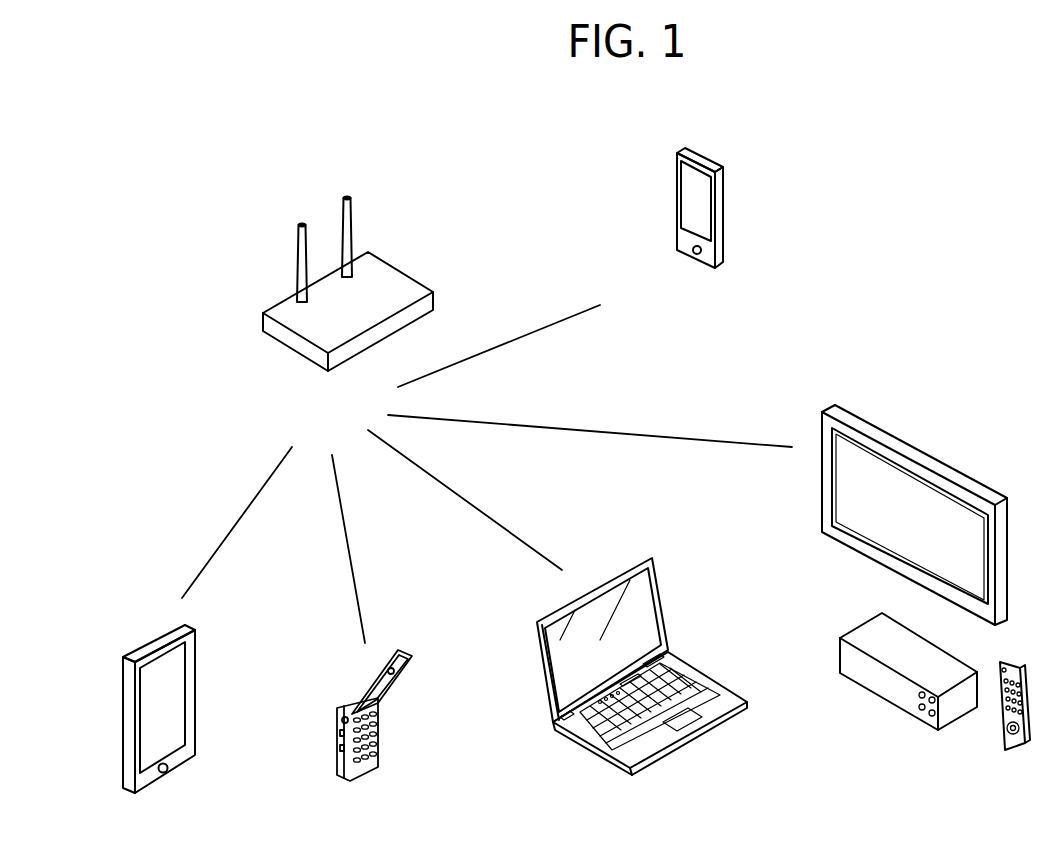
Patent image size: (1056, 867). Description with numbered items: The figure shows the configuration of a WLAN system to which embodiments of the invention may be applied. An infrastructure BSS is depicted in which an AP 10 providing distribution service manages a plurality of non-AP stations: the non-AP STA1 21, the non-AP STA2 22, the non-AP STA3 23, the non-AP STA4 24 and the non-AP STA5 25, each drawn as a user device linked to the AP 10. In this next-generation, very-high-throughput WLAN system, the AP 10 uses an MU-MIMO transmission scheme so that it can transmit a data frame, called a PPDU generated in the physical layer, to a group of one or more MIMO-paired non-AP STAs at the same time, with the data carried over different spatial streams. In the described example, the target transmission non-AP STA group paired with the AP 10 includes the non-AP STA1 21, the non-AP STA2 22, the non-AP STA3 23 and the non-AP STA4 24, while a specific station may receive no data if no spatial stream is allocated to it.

The AP 10 is at (348, 321).
The non-AP STA1 21 is at (146, 744).
The non-AP STA2 22 is at (360, 756).
The non-AP STA3 23 is at (642, 699).
The non-AP STA4 24 is at (926, 603).
The non-AP STA5 25 is at (695, 244).